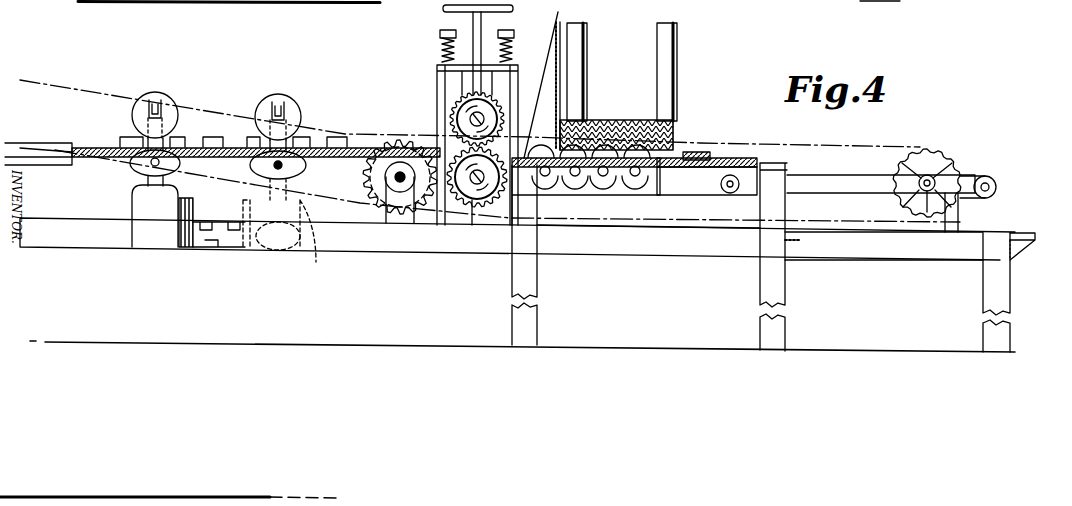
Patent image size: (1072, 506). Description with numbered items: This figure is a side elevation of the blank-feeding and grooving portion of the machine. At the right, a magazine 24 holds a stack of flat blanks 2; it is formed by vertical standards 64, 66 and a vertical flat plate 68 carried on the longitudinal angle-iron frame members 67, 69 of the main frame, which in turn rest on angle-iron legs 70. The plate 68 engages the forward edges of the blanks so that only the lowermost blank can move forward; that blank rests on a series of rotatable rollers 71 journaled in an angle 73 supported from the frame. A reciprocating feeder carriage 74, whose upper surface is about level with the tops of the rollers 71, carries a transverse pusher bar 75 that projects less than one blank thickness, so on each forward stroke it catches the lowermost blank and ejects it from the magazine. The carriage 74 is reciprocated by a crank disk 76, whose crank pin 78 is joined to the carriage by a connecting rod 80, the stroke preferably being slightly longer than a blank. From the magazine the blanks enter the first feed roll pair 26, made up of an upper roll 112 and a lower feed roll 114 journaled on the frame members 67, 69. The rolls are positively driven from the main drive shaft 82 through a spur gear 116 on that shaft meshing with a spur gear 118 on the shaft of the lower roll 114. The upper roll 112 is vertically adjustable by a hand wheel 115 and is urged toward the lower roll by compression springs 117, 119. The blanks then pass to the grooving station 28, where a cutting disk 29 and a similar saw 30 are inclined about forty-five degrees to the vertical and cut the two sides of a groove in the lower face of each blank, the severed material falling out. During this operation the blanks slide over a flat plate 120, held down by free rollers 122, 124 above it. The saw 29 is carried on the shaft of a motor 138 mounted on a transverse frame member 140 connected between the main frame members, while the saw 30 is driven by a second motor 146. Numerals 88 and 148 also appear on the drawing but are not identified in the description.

The blank 2 is at (617, 120).
The magazine 24 is at (621, 268).
The first feed roll pair 26 is at (392, 69).
The grooving station 28 is at (199, 292).
The cutting disk 29 is at (262, 166).
The saw 30 is at (133, 178).
The vertical standard 64 is at (681, 75).
The vertical standard 66 is at (589, 75).
The longitudinal angle-iron frame member 67 is at (882, 256).
The vertical flat plate 68 is at (556, 50).
The longitudinal angle-iron frame member 69 is at (880, 7).
The angle-iron leg 70 is at (512, 327).
The rotatable roller 71 is at (592, 178).
The angle 73 is at (563, 176).
The reciprocating feeder carriage 74 is at (735, 157).
The transverse pusher bar 75 is at (696, 152).
The crank disk 76 is at (898, 175).
The crank pin 78 is at (991, 177).
The connecting rod 80 is at (826, 190).
The main drive shaft 82 is at (384, 177).
The upper arm 88 is at (379, 6).
The upper roll 112 is at (451, 112).
The lower feed roll 114 is at (458, 203).
The hand wheel 115 is at (445, 10).
The spur gear 116 is at (410, 140).
The compression spring 117 is at (440, 50).
The spur gear 118 is at (478, 207).
The compression spring 119 is at (514, 53).
The plate 120 is at (116, 3).
The free roller 122 is at (158, 93).
The free roller 124 is at (292, 100).
The motor 138 is at (307, 252).
The transverse frame member 140 is at (227, 248).
The motor 146 is at (153, 240).
The feed chute 148 is at (43, 170).